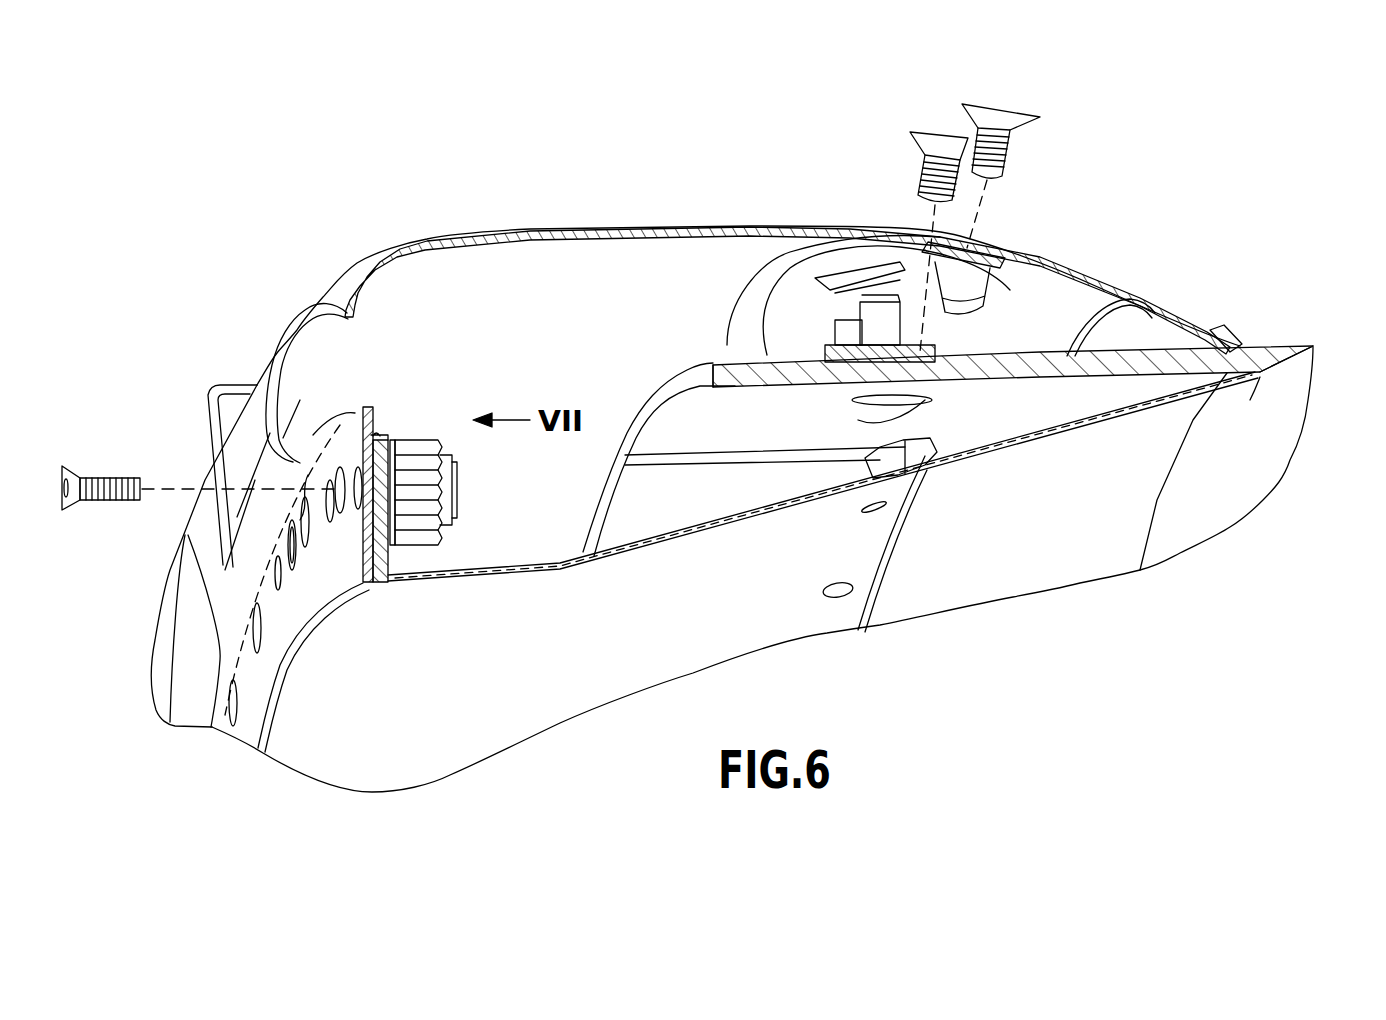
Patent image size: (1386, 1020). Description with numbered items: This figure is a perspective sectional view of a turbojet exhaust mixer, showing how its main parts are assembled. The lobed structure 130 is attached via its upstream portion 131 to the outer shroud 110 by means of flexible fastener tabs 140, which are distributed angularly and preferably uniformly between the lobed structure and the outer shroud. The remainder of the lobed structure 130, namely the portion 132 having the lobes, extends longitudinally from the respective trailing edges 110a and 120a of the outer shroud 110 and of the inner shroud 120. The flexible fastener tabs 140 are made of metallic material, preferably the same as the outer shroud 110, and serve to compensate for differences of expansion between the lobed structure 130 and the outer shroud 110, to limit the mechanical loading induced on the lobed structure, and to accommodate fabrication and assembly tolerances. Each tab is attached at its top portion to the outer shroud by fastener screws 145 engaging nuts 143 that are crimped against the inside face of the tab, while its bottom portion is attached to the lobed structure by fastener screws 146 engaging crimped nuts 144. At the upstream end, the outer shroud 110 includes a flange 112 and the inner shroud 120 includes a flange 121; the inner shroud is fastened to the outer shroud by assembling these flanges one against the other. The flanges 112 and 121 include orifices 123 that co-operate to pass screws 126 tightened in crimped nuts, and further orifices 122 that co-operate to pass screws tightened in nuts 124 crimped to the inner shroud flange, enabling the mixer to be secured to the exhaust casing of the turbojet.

The outer shroud 110 is at (515, 240).
The trailing edge of the outer shroud 110a is at (1235, 345).
The flange 112 is at (248, 744).
The inner shroud 120 is at (748, 522).
The trailing edge of the inner shroud 120a is at (1256, 378).
The flange 121 is at (380, 432).
The orifices 122 is at (305, 480).
The orifices 123 is at (363, 412).
The nuts 124 is at (448, 490).
The screws 126 is at (115, 478).
The lobed structure 130 is at (1266, 345).
The upstream portion of the lobed structure 131 is at (1040, 352).
The portion having the lobes 132 is at (1318, 349).
The flexible fastener tabs 140 is at (718, 312).
The nuts 143 is at (953, 300).
The nuts 144 is at (845, 335).
The fastener screws 145 is at (943, 133).
The fastener screws 146 is at (868, 398).